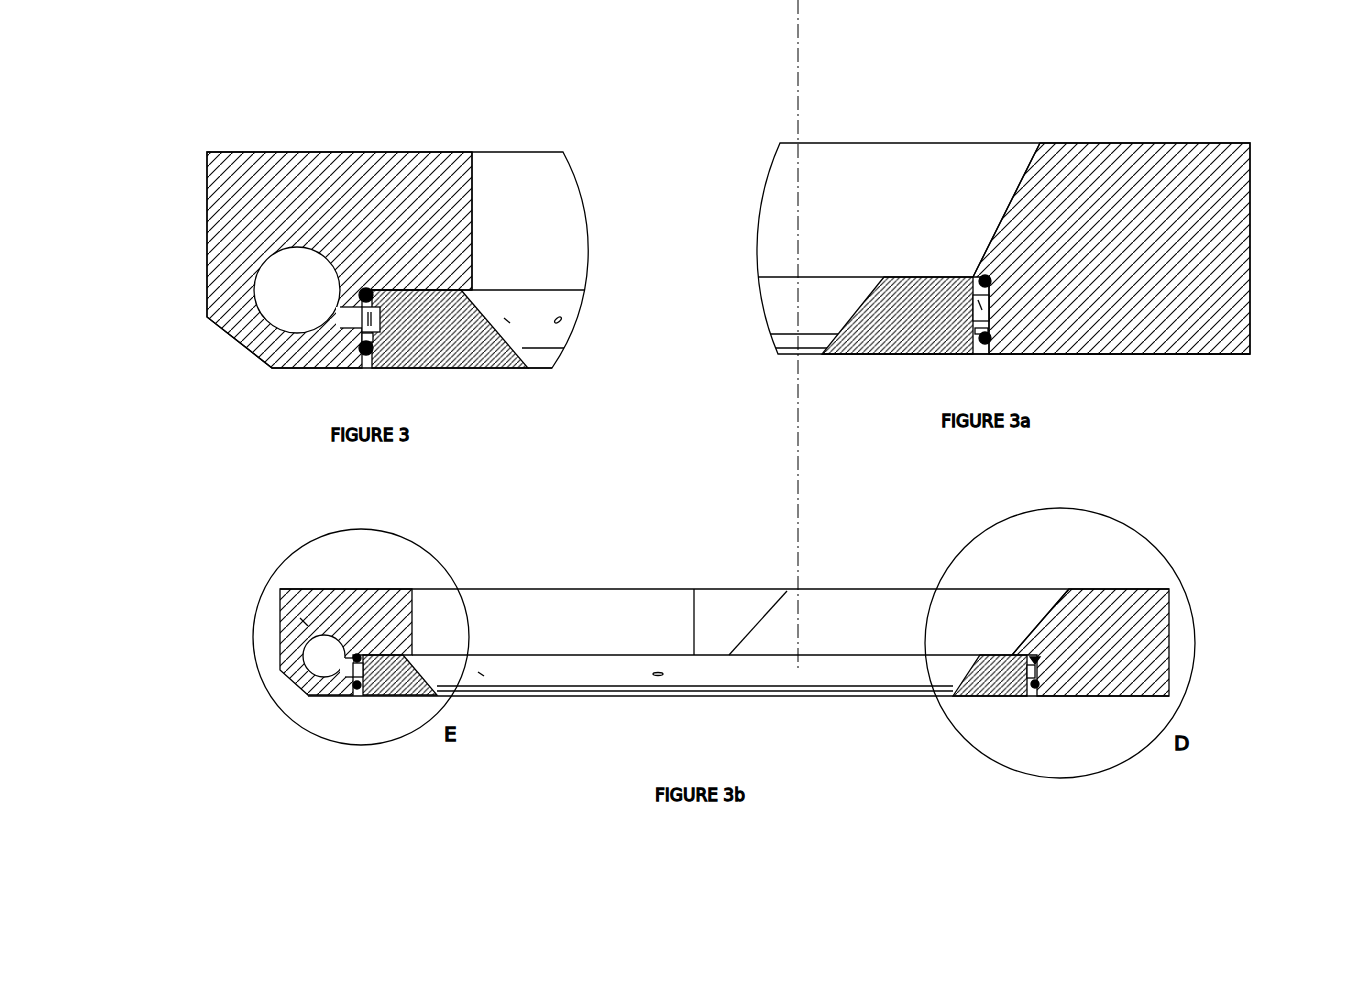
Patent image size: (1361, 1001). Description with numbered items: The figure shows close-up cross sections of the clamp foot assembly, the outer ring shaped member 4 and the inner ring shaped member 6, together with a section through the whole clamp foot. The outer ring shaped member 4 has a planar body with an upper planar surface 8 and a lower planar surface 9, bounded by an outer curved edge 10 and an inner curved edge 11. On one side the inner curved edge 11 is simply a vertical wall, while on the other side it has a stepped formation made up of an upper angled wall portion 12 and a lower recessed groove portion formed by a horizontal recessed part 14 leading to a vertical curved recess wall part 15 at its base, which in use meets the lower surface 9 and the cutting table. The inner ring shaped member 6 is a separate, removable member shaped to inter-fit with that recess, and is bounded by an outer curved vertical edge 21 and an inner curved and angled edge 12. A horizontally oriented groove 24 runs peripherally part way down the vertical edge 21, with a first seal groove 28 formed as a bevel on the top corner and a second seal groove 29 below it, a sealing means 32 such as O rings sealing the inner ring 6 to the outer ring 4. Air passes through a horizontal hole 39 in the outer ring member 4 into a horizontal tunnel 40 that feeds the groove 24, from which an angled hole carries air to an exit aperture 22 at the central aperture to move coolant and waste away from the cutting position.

In FIG. 3, the outer ring shaped member 4 is at (339, 222).
In FIG. 3A, the outer ring shaped member 4 is at (1142, 248).
In FIG. 3B, the outer ring shaped member 4 is at (779, 642).
In FIG. 3, the inner ring shaped member 6 is at (452, 360).
In FIG. 3A, the inner ring shaped member 6 is at (817, 370).
In FIG. 3B, the inner ring shaped member 6 is at (695, 715).
In FIG. 3B, the upper planar surface 8 is at (758, 545).
In FIG. 3A, the lower planar surface 9 is at (1010, 375).
In FIG. 3, the outer curved edge 10 is at (350, 260).
In FIG. 3A, the outer curved edge 10 is at (1050, 248).
In FIG. 3, the inner curved edge 11 is at (499, 200).
In FIG. 3B, the inner curved edge 11 is at (712, 573).
In FIG. 3A, the upper angled wall portion 12 is at (1038, 171).
In FIG. 3B, the upper angled wall portion 12 is at (987, 560).
In FIG. 3A, the horizontal recessed part 14 is at (831, 221).
In FIG. 3A, the vertical curved recess wall part 15 is at (1111, 210).
In FIG. 3A, the outer curved vertical edge 21 is at (1157, 296).
In FIG. 3, the exit aperture 22 is at (592, 351).
In FIG. 3B, the exit aperture 22 is at (734, 689).
In FIG. 3, the groove 24 is at (436, 387).
In FIG. 3A, the groove 24 is at (869, 200).
In FIG. 3A, the first seal groove 28 is at (922, 164).
In FIG. 3A, the second seal groove 29 is at (928, 351).
In FIG. 3, the sealing means 32 is at (304, 372).
In FIG. 3A, the sealing means 32 is at (1041, 377).
In FIG. 3, the horizontal hole 39 is at (283, 288).
In FIG. 3B, the horizontal hole 39 is at (239, 615).
In FIG. 3, the horizontal tunnel 40 is at (259, 360).